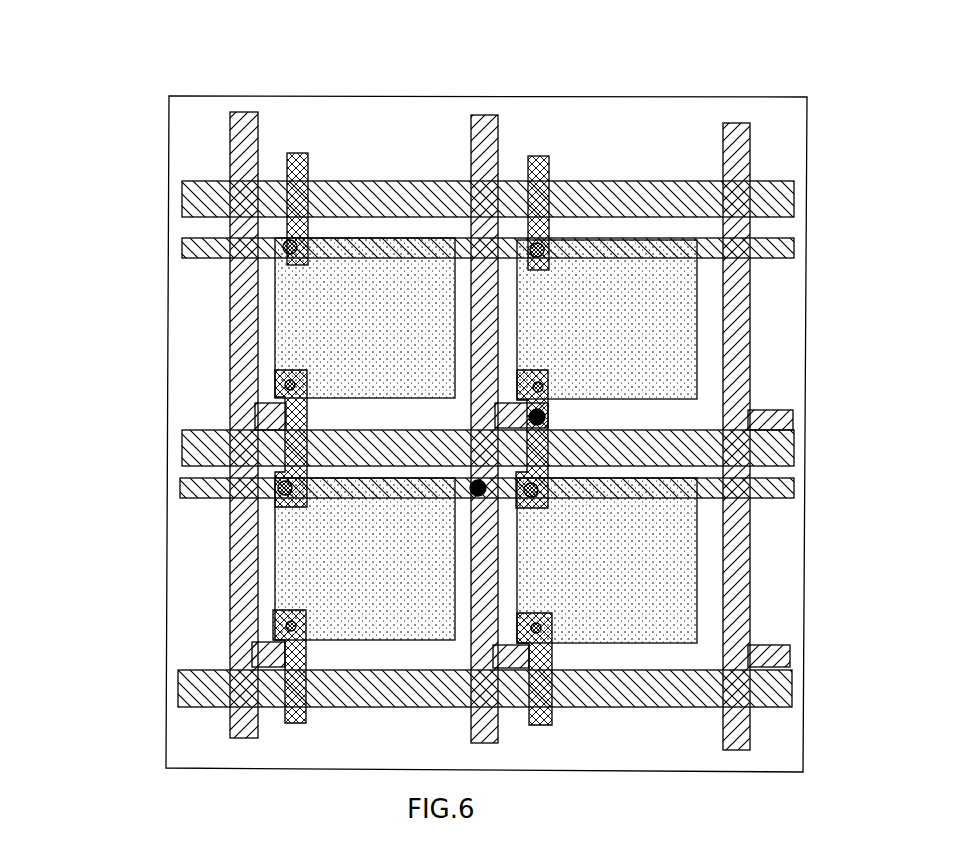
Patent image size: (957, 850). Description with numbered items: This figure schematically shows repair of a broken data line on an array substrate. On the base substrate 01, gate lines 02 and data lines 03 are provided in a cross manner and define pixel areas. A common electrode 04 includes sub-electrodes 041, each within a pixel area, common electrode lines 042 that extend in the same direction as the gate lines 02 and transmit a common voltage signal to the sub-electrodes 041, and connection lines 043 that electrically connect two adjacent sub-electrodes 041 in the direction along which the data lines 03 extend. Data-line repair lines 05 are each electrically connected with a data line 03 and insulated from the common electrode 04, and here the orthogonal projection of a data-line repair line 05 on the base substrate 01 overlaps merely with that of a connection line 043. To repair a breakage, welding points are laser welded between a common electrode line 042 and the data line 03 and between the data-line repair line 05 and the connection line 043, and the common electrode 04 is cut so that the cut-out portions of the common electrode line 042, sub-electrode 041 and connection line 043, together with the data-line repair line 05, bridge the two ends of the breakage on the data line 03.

The base substrate 01 is at (486, 405).
The gate line 02 is at (782, 182).
The data line 03 is at (247, 143).
The common electrode 04 is at (412, 440).
The sub-electrode 041 is at (295, 326).
The common electrode line 042 is at (262, 247).
The connection line 043 is at (300, 458).
The data-line repair line 05 is at (790, 410).